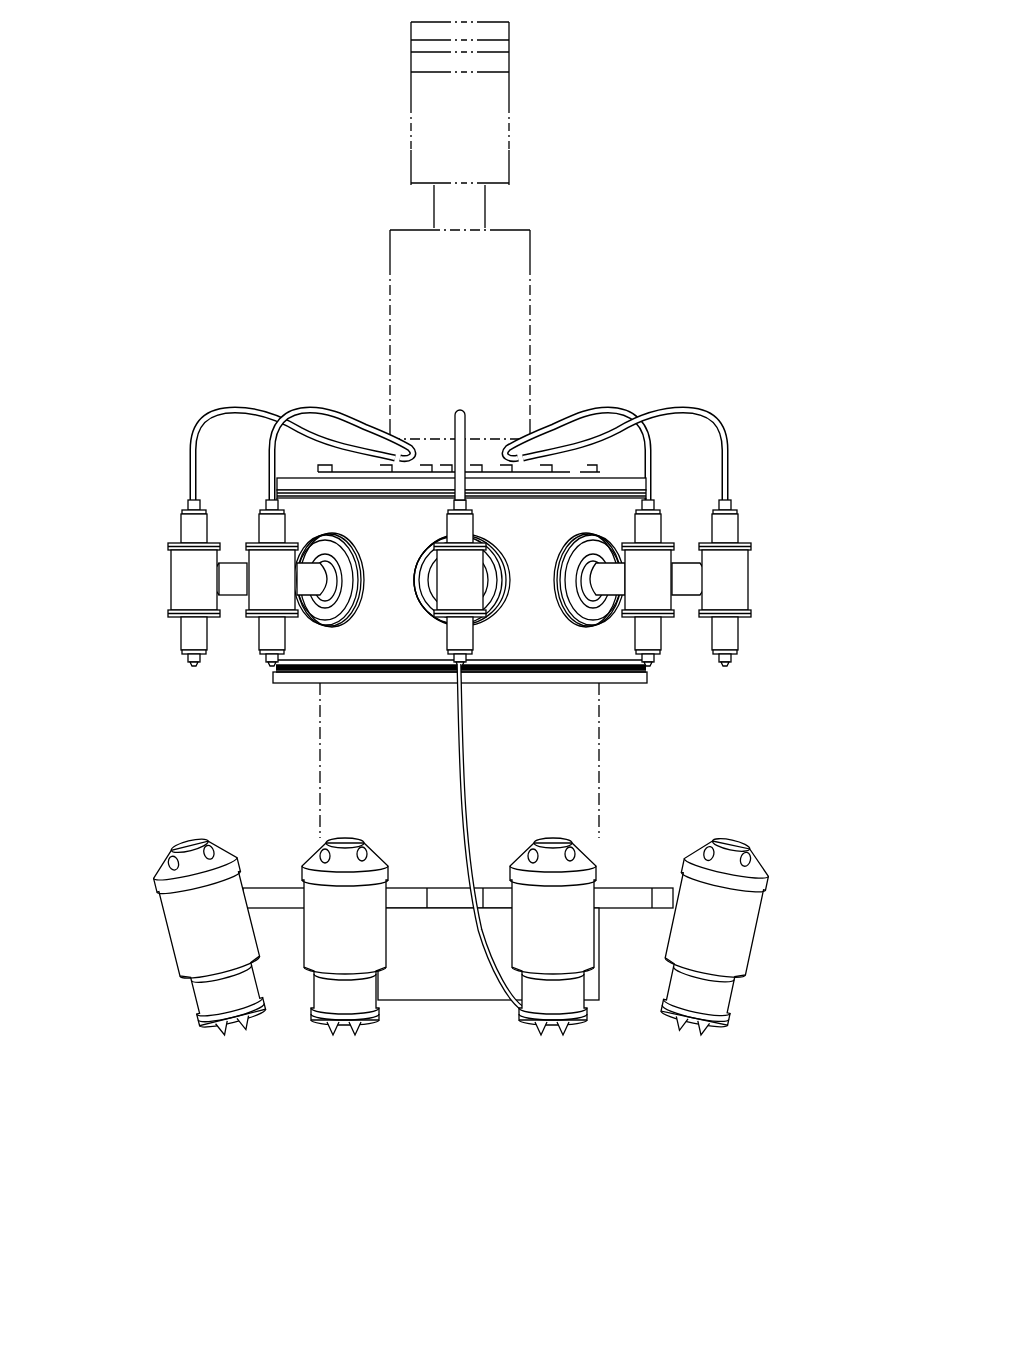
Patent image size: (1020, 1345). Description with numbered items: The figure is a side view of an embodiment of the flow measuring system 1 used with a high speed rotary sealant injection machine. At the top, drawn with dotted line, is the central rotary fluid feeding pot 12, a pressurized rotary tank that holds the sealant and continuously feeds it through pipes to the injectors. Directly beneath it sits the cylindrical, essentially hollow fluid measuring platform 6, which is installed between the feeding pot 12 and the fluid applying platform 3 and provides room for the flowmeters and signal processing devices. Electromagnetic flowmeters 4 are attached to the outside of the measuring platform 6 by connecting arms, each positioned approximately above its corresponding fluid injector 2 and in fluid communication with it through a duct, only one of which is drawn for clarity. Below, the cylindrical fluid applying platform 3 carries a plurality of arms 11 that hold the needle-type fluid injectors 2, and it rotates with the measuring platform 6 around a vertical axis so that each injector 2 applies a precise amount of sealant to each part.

The cleaning apparatus 1 is at (288, 240).
The fluid injector 2 is at (563, 930).
The fluid applying platform 3 is at (437, 963).
The electromagnetic flowmeter 4 is at (735, 580).
The fluid measuring platform 6 is at (535, 540).
The arm 11 is at (277, 900).
The fluid feeding pot 12 is at (482, 355).